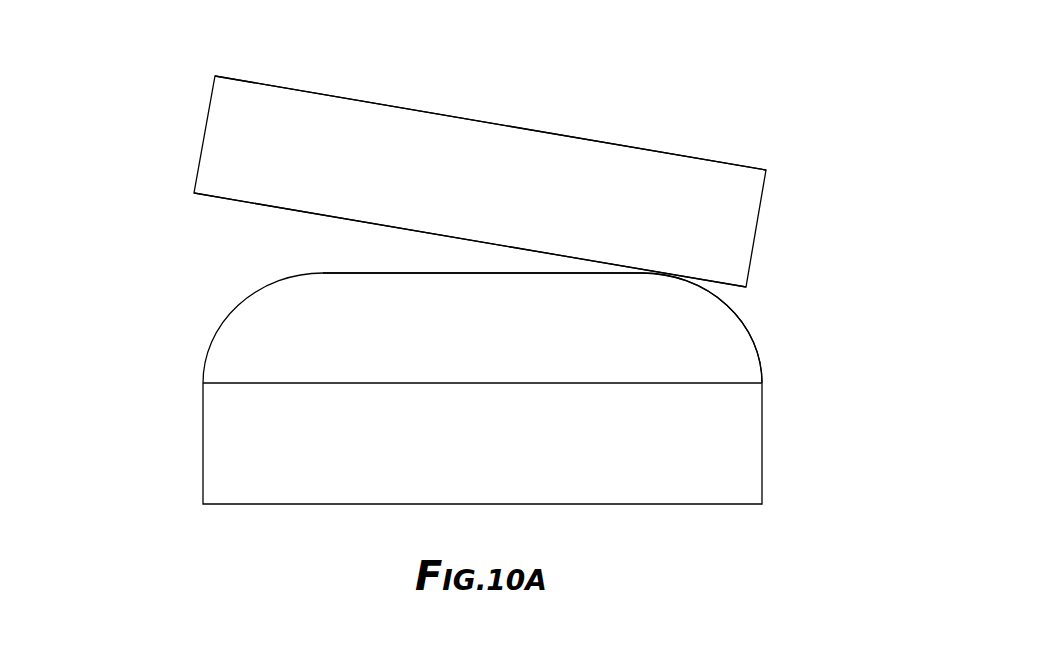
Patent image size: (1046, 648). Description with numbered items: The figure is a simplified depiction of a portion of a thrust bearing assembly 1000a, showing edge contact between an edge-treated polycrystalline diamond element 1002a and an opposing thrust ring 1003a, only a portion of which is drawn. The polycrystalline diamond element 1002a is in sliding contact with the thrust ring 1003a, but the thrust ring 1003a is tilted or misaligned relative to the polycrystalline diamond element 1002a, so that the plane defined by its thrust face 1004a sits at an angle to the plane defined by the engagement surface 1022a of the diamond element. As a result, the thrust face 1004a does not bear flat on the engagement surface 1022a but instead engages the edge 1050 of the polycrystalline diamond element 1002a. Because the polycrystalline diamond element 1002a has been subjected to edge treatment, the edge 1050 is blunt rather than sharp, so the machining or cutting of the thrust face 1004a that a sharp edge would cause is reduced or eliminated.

The thrust bearing assembly 1000a is at (178, 52).
The thrust ring 1003a is at (675, 144).
The thrust face 1004a is at (248, 203).
The polycrystalline diamond element 1002a is at (765, 440).
The engagement surface 1022a is at (384, 273).
The edge 1050 is at (726, 293).